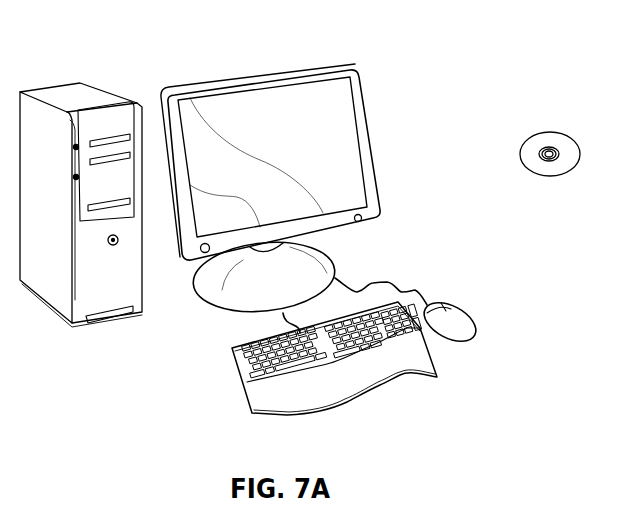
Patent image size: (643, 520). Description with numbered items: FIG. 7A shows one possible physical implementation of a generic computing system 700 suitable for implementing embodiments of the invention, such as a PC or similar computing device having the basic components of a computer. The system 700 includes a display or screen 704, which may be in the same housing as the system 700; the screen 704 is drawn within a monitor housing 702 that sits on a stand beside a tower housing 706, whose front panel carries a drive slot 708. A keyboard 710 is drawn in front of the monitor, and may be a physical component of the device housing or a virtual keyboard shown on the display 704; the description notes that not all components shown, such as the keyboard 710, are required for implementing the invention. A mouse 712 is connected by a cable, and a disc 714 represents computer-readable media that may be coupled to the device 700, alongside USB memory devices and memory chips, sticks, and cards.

The computing system 700 is at (478, 52).
The display monitor 702 is at (314, 191).
The display 704 is at (332, 104).
The computer tower / housing 706 is at (103, 178).
The media drive slot 708 is at (125, 203).
The keyboard 710 is at (240, 386).
The mouse 712 is at (473, 312).
The removable storage disc 714 is at (567, 133).